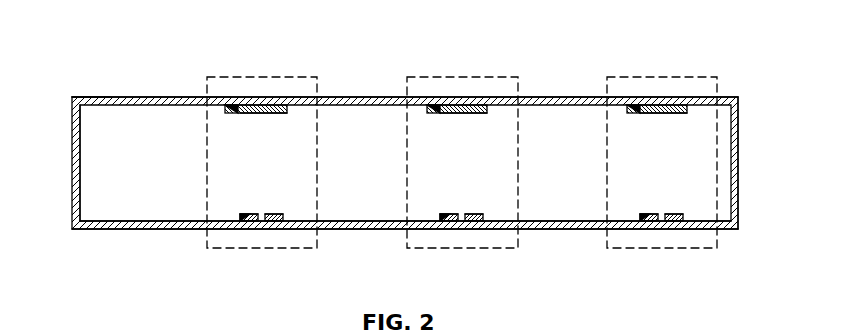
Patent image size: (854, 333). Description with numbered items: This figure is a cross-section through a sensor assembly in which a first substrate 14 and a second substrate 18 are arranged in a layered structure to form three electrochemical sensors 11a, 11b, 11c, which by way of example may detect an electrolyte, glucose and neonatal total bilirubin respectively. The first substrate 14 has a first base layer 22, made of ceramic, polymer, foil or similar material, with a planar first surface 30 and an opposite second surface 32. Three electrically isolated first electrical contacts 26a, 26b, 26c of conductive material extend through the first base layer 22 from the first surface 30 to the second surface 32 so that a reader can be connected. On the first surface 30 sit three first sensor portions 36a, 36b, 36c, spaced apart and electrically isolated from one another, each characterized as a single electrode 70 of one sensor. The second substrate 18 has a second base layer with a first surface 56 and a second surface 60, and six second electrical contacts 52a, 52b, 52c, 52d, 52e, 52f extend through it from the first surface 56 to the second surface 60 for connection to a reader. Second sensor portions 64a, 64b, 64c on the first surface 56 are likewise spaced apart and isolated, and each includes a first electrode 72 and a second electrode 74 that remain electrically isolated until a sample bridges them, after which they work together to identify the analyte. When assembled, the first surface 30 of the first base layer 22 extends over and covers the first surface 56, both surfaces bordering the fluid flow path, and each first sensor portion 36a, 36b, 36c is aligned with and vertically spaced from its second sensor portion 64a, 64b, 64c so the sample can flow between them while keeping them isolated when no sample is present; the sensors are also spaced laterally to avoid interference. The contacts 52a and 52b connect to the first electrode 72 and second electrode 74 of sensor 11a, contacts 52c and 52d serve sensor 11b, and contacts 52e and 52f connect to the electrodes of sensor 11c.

The sensor 11a is at (212, 62).
The sensor 11b is at (412, 62).
The sensor 11c is at (612, 62).
The first substrate 14 is at (724, 97).
The second substrate 18 is at (722, 229).
The first base layer 22 is at (123, 97).
The first electrical contact 26a is at (262, 105).
The first electrical contact 26b is at (462, 105).
The first electrical contact 26c is at (662, 105).
The first surface 30 is at (83, 107).
The second surface 32 is at (98, 97).
The first sensor portion 36a is at (224, 110).
The first sensor portion 36b is at (424, 110).
The first sensor portion 36c is at (624, 110).
The second electrical contact 52a is at (250, 229).
The second electrical contact 52b is at (276, 229).
The second electrical contact 52c is at (450, 229).
The second electrical contact 52d is at (476, 229).
The second electrical contact 52e is at (650, 229).
The second electrical contact 52f is at (676, 229).
The first surface 56 is at (83, 221).
The second surface 60 is at (88, 229).
The second sensor portion 64a is at (234, 212).
The second sensor portion 64b is at (434, 212).
The second sensor portion 64c is at (634, 212).
The single electrode 70 is at (258, 113).
The first electrode 72 is at (247, 214).
The second electrode 74 is at (273, 214).